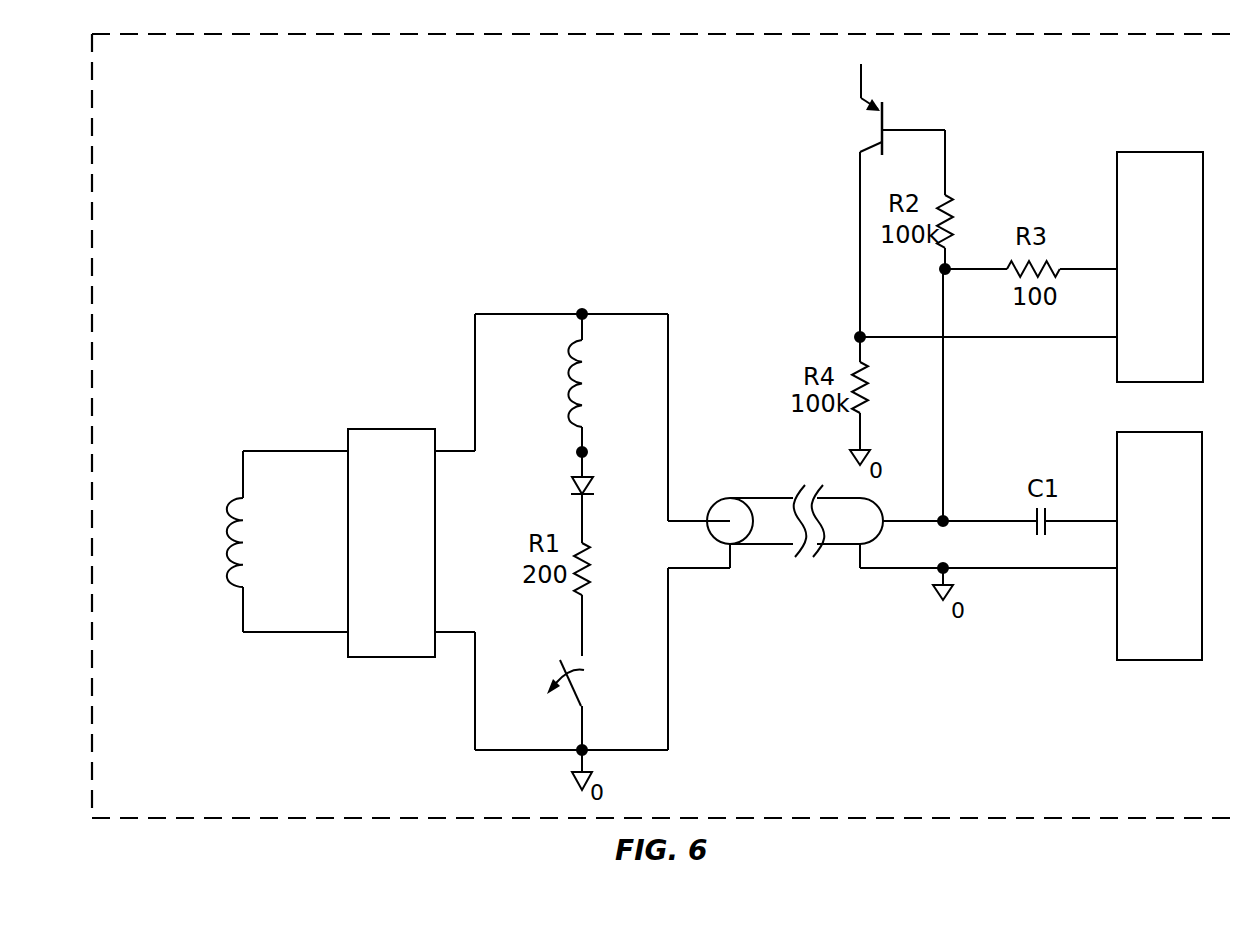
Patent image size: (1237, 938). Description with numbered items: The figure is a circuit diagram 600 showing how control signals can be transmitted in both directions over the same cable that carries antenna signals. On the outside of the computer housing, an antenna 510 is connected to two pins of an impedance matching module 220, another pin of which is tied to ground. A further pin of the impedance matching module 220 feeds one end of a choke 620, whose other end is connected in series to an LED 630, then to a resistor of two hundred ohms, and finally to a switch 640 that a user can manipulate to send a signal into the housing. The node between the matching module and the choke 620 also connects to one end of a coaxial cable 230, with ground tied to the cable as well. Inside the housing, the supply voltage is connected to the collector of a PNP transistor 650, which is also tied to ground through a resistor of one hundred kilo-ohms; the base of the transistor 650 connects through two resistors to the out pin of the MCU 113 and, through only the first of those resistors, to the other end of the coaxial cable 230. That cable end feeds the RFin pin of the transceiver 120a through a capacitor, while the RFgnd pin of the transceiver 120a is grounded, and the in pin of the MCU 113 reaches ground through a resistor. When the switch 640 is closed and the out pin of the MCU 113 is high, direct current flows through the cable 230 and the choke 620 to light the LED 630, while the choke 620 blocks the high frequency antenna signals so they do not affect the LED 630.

The circuit diagram 600 is at (863, 746).
The antenna 510 is at (243, 532).
The impedance matching module 220 is at (392, 658).
The choke 620 is at (582, 382).
The LED 630 is at (594, 489).
The switch 640 is at (572, 657).
The coaxial cable 230 is at (776, 498).
The PNP transistor 650 is at (884, 120).
The MCU 113 is at (1186, 208).
The transceiver 120a is at (1191, 476).